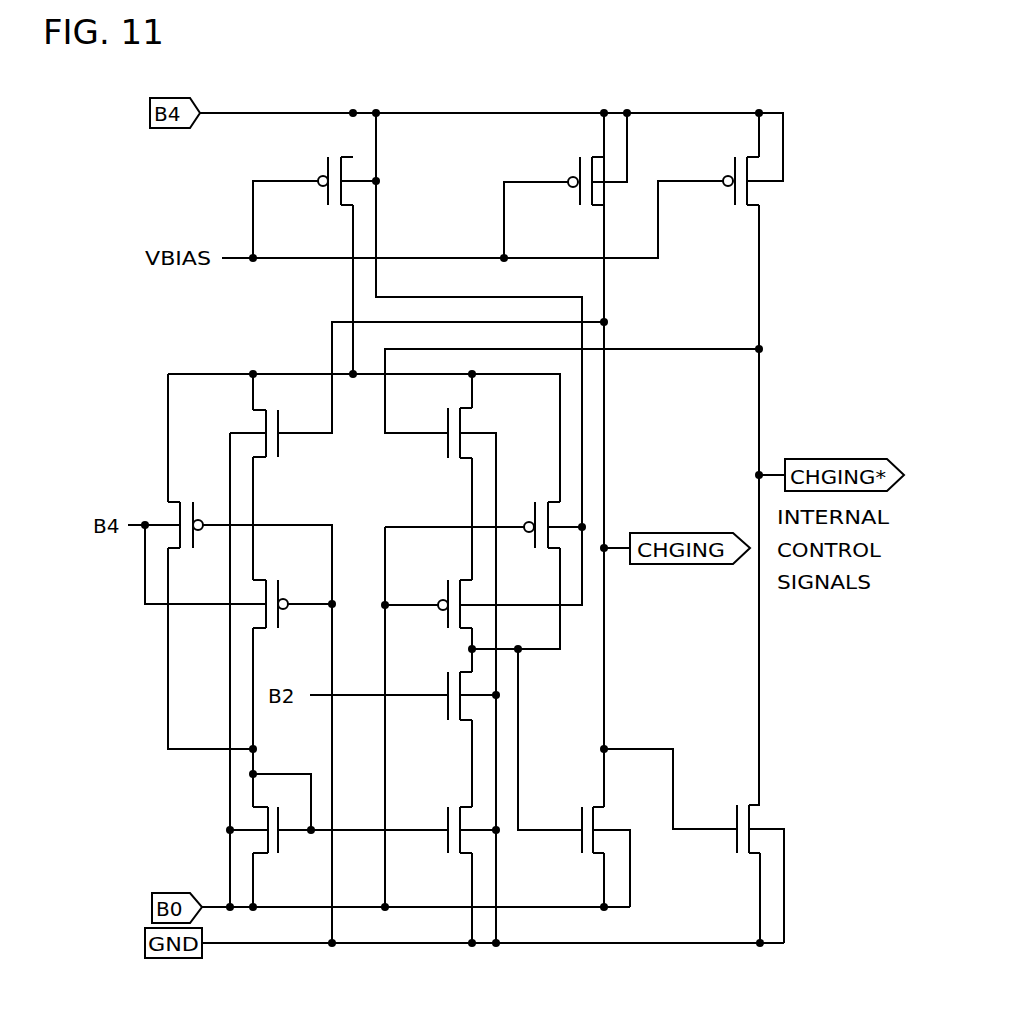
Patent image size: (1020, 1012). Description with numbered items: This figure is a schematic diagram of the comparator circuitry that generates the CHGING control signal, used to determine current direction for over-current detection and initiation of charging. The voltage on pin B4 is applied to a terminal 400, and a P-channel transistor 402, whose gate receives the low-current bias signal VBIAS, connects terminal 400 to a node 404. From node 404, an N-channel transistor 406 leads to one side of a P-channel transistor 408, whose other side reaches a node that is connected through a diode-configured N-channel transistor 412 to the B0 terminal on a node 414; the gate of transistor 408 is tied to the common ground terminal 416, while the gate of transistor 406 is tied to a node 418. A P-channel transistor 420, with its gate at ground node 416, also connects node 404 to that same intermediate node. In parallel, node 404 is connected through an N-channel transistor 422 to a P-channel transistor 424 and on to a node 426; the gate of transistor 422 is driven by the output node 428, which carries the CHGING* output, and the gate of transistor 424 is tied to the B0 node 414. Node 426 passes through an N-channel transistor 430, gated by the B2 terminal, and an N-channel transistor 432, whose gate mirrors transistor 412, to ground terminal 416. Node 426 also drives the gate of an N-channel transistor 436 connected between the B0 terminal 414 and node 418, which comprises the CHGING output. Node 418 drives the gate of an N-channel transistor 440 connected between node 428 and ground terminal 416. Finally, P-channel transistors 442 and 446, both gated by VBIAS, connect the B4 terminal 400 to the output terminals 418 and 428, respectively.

The terminal 400 is at (627, 113).
The P-channel transistor 402 is at (341, 205).
The node 404 is at (353, 378).
The N-channel transistor 406 is at (260, 412).
The P-channel transistor 408 is at (255, 621).
The N-channel transistor 412 is at (253, 749).
The node 414 is at (230, 907).
The terminal 416 is at (333, 943).
The node 418 is at (605, 322).
The P-channel transistor 420 is at (175, 515).
The N-channel transistor 422 is at (460, 420).
The P-channel transistor 424 is at (460, 595).
The node 426 is at (560, 650).
The node 428 is at (760, 347).
The N-channel transistor 430 is at (458, 722).
The N-channel transistor 432 is at (469, 805).
The N-channel transistor 436 is at (597, 855).
The N-channel transistor 440 is at (752, 818).
The P-channel transistor 442 is at (578, 168).
The P-channel transistor 446 is at (750, 195).